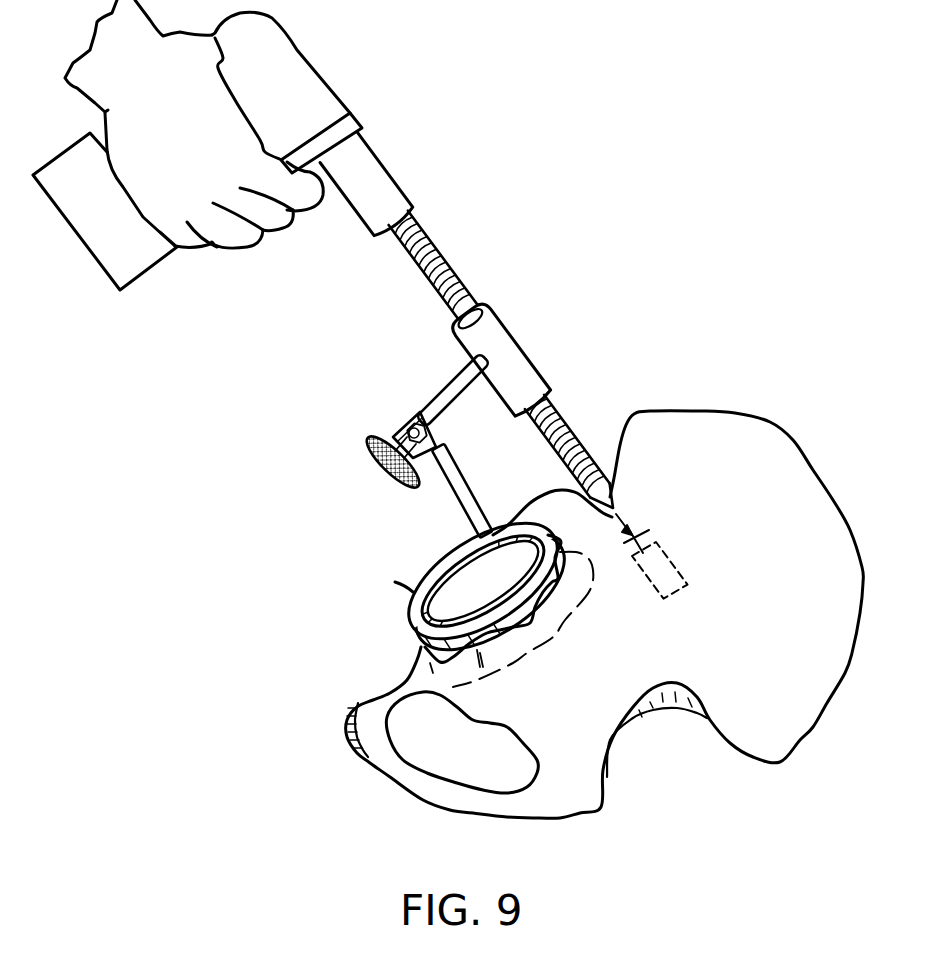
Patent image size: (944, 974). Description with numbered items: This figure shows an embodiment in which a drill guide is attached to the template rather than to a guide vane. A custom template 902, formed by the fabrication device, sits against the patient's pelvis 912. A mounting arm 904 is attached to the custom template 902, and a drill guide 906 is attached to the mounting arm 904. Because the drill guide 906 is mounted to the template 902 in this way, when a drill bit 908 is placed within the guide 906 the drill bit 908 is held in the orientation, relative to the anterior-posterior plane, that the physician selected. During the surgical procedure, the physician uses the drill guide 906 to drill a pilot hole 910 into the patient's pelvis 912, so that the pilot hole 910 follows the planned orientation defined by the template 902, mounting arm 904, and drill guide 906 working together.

The custom template 902 is at (412, 597).
The mounting arm 904 is at (432, 402).
The drill guide 906 is at (532, 357).
The drill bit 908 is at (438, 248).
The pilot hole 910 is at (676, 568).
The pelvis 912 is at (753, 440).